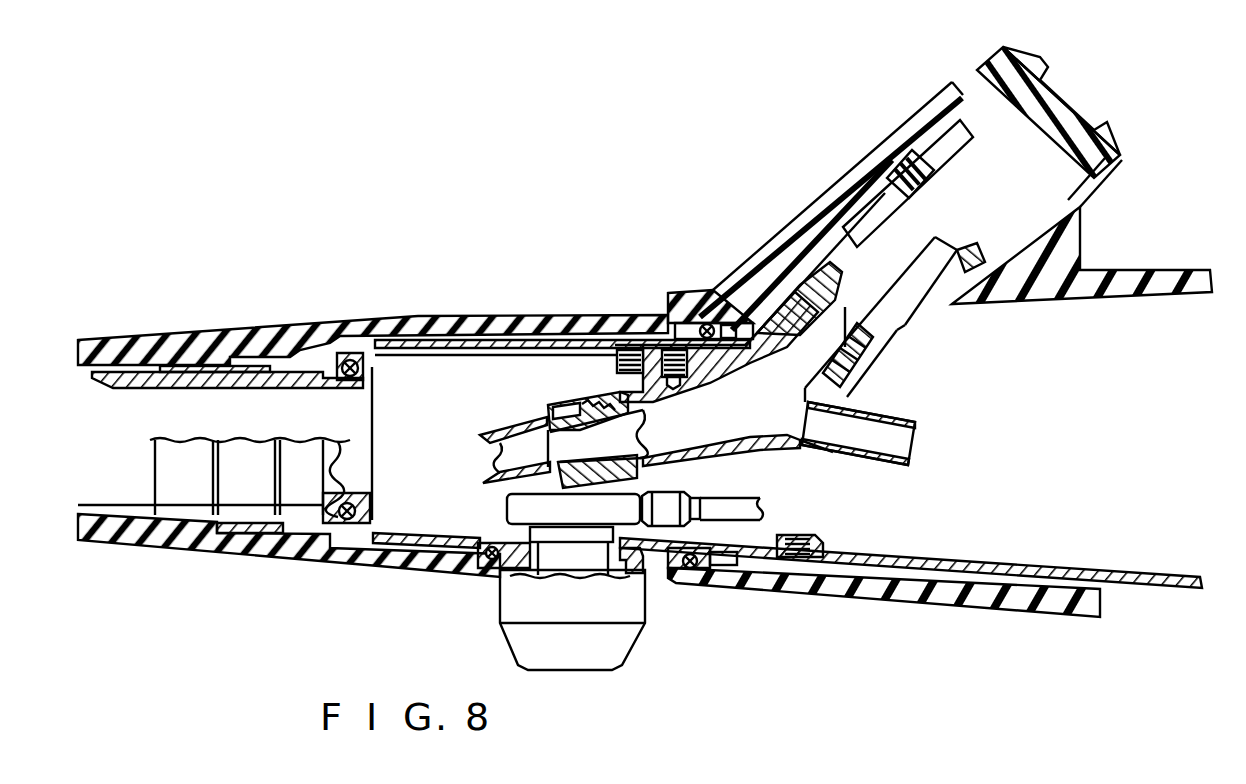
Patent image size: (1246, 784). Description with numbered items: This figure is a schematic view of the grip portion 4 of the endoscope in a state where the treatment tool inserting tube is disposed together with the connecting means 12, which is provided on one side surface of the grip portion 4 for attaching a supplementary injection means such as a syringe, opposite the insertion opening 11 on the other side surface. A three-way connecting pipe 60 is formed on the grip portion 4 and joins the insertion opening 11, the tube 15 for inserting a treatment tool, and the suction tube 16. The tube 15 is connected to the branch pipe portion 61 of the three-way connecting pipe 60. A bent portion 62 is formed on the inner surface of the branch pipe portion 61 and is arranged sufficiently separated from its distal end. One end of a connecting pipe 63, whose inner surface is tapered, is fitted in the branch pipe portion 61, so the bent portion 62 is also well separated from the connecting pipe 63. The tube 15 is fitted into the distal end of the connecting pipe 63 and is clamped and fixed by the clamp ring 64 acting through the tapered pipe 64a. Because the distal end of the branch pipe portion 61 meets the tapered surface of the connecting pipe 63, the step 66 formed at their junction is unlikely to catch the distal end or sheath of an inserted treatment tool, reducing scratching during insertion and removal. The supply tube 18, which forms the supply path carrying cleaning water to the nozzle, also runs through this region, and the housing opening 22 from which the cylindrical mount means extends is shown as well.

The grip portion 4 is at (1137, 270).
The insertion opening 11 is at (1075, 104).
The connecting means 12 is at (663, 641).
The tube for inserting a treatment tool 15 is at (504, 432).
The suction tube 16 is at (886, 418).
The supply tube 18 is at (765, 509).
The opening of the housing 22 is at (507, 507).
The three-way connecting pipe 60 is at (770, 450).
The branch pipe portion 61 is at (687, 455).
The bent portion 62 is at (668, 403).
The connecting pipe 63 is at (575, 400).
The clamp ring 64 is at (600, 399).
The tapered pipe 64a is at (547, 405).
The step 66 is at (637, 407).